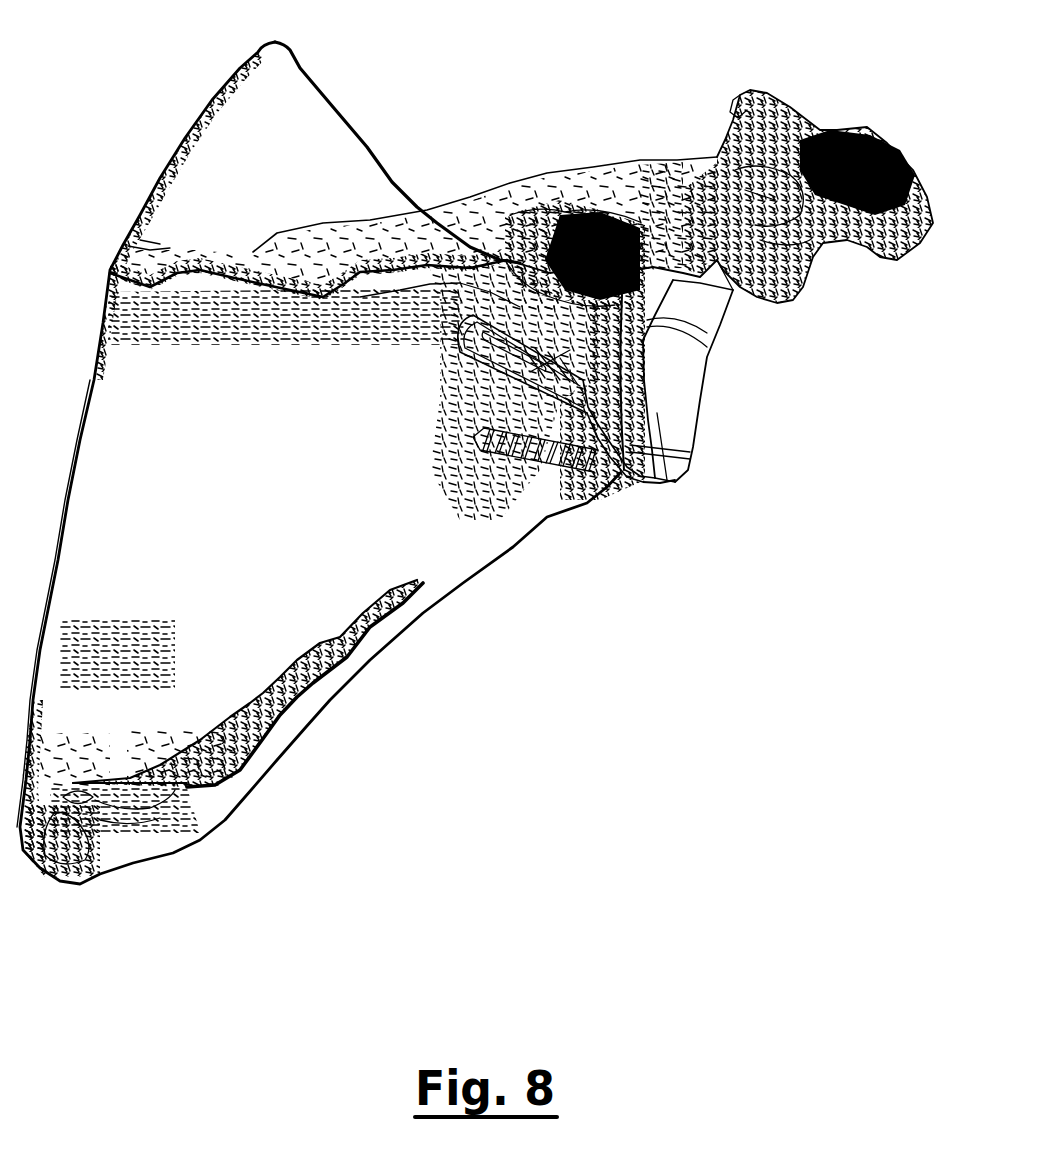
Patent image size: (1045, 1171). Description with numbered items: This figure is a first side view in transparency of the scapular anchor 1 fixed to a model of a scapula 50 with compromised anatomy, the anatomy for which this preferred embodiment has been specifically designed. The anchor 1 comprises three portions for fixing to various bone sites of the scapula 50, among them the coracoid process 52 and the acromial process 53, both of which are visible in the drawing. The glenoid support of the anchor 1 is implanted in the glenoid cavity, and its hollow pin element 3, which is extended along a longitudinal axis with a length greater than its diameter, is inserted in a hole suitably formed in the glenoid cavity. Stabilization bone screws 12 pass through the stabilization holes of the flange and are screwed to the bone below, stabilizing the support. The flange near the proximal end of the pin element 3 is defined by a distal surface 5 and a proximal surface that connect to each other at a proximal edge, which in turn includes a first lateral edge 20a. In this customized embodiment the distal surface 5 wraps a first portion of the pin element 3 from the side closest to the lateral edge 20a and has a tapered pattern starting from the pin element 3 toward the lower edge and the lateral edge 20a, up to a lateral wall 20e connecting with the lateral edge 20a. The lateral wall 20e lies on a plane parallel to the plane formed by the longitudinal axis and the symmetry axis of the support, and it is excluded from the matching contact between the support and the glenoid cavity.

The anchor 1 is at (632, 495).
The pin element 3 is at (483, 360).
The distal surface 5 is at (647, 188).
The stabilization bone screws 12 is at (545, 452).
The first lateral edge 20a is at (687, 415).
The lateral wall 20e is at (670, 483).
The scapula 50 is at (140, 88).
The coracoid process 52 is at (777, 303).
The acromial process 53 is at (520, 213).